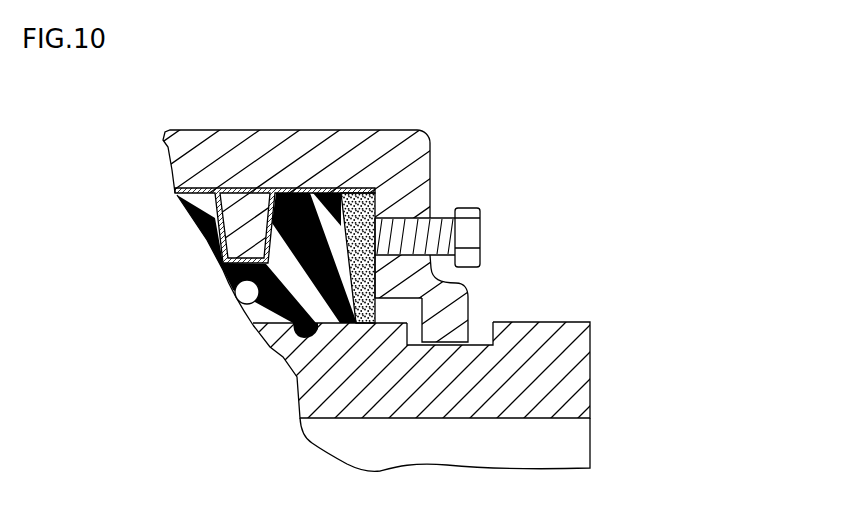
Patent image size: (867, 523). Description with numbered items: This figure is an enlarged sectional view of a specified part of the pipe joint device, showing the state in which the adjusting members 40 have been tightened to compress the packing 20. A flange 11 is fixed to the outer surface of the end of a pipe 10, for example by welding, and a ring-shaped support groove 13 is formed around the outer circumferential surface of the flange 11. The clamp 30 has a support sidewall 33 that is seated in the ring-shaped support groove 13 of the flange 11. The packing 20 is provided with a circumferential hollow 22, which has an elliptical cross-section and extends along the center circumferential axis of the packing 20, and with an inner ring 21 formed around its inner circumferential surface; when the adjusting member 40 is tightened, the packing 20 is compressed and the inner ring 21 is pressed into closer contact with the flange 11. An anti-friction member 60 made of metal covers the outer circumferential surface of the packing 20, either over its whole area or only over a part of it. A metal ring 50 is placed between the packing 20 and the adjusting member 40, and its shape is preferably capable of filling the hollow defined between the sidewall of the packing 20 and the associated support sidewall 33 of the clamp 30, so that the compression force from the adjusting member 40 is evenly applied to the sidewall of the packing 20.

The pipe 10 is at (570, 452).
The flange 11 is at (568, 382).
The ring-shaped support groove 13 is at (480, 345).
The packing 20 is at (230, 283).
The inner ring 21 is at (307, 334).
The circumferential hollow 22 is at (247, 292).
The clamp 30 is at (390, 145).
The support sidewall 33 is at (470, 303).
The adjusting member 40 is at (470, 236).
The metal ring 50 is at (375, 196).
The anti-friction member 60 is at (297, 190).